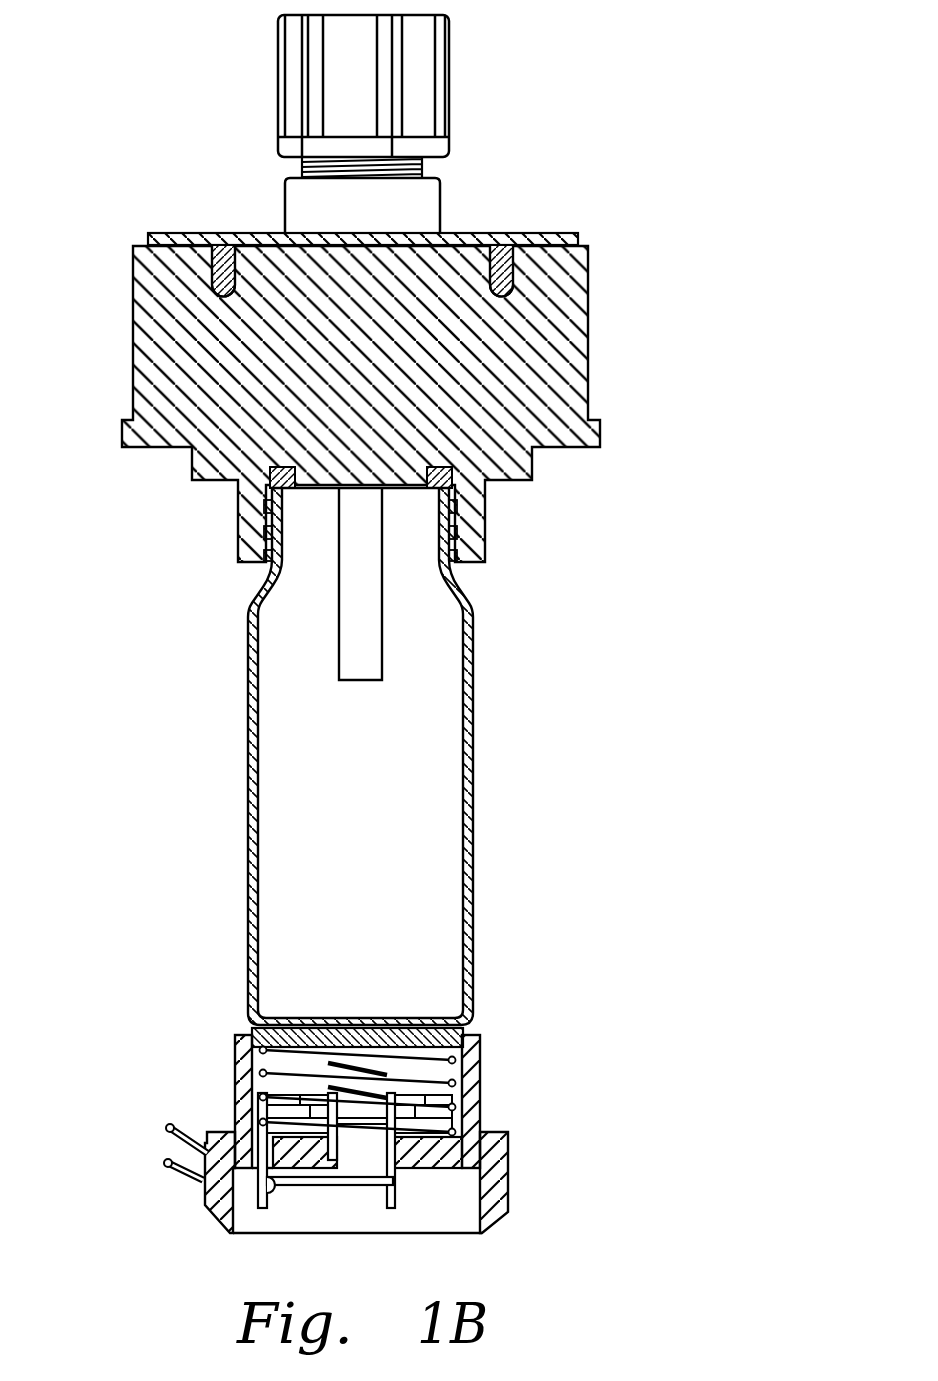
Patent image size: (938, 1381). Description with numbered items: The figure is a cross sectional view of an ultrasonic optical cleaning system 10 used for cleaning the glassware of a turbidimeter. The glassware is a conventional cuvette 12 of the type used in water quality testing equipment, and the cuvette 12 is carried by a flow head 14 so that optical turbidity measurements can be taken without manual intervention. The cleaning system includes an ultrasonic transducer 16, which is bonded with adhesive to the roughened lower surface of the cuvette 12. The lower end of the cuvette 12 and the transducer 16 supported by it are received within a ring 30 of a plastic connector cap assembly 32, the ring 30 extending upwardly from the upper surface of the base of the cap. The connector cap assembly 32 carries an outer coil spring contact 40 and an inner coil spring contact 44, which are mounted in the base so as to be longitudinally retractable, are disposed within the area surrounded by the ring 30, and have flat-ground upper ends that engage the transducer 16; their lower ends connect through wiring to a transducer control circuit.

The ultrasonic optical cleaning system 10 is at (86, 161).
The cuvette 12 is at (473, 746).
The flow head 14 is at (590, 286).
The ultrasonic transducer 16 is at (468, 1027).
The ring 30 is at (480, 1047).
The connector cap assembly 32 is at (235, 1090).
The outer coil spring contact 40 is at (462, 1082).
The inner coil spring contact 44 is at (357, 1065).